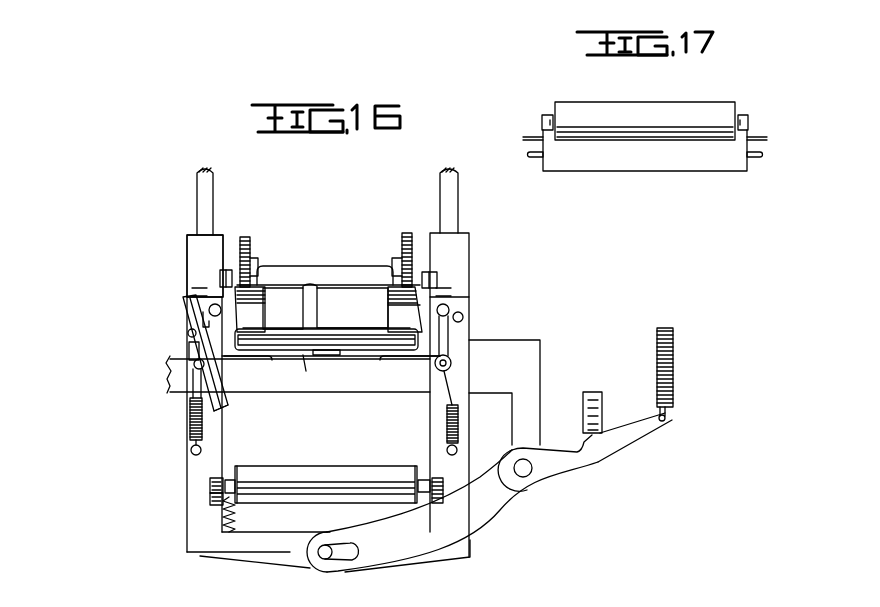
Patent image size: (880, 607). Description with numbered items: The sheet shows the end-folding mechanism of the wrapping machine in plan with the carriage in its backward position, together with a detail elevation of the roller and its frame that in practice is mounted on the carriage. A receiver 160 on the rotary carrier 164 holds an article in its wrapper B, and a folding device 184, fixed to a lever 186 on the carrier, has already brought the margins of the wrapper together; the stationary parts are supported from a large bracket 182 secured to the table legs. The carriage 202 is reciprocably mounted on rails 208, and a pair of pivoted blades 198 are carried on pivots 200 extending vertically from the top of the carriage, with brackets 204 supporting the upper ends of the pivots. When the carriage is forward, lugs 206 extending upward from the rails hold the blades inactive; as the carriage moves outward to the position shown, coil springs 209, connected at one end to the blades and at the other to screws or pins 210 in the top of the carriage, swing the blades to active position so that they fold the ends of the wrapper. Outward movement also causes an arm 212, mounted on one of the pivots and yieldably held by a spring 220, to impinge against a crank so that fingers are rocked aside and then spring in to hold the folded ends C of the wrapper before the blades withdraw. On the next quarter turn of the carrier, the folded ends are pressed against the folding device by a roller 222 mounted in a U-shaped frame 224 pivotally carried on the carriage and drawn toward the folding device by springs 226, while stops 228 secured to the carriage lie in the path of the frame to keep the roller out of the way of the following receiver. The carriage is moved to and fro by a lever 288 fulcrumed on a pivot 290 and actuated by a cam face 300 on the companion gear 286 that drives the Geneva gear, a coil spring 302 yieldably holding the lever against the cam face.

In FIG. 16, the receiver 160 is at (358, 283).
In FIG. 16, the rotary carrier 164 is at (402, 235).
In FIG. 16, the bracket 182 is at (500, 372).
In FIG. 16, the folding device 184 is at (347, 328).
In FIG. 16, the lever 186 is at (305, 314).
In FIG. 16, the pivoted blades 198 is at (249, 362).
In FIG. 16, the pivots 200 is at (207, 363).
In FIG. 16, the carriage 202 is at (195, 248).
In FIG. 16, the brackets 204 is at (443, 340).
In FIG. 16, the lugs 206 is at (220, 278).
In FIG. 16, the rails 208 is at (202, 202).
In FIG. 16, the coil springs 209 is at (190, 427).
In FIG. 16, the screws or pins 210 is at (191, 451).
In FIG. 16, the arm 212 is at (222, 412).
In FIG. 16, the spring 220 is at (207, 320).
In FIG. 16, the roller 222 is at (326, 484).
In FIG. 17, the roller 222 is at (665, 112).
In FIG. 16, the U-shaped frame 224 is at (230, 478).
In FIG. 17, the U-shaped frame 224 is at (645, 167).
In FIG. 16, the springs 226 is at (228, 512).
In FIG. 16, the stops 228 is at (225, 496).
In FIG. 17, the stops 228 is at (537, 157).
In FIG. 16, the companion gear 286 is at (598, 392).
In FIG. 16, the lever 288 is at (492, 510).
In FIG. 16, the pivot 290 is at (525, 470).
In FIG. 16, the cam face 300 is at (595, 443).
In FIG. 16, the coil spring 302 is at (674, 336).
In FIG. 16, the wrapper B is at (403, 313).
In FIG. 16, the folded ends C is at (343, 353).